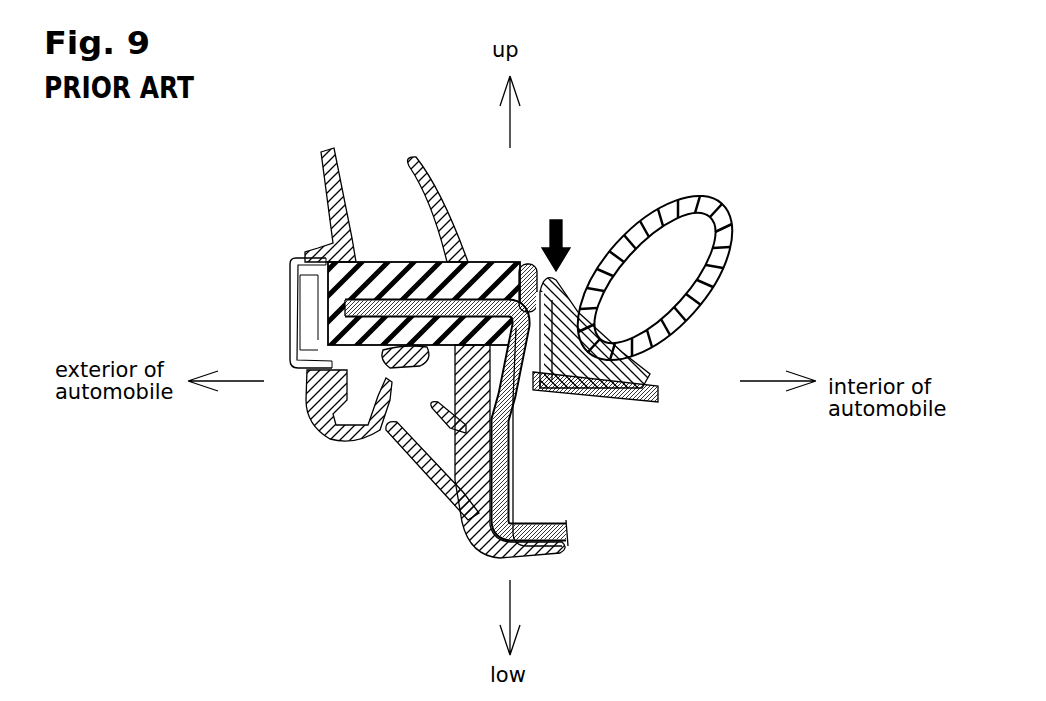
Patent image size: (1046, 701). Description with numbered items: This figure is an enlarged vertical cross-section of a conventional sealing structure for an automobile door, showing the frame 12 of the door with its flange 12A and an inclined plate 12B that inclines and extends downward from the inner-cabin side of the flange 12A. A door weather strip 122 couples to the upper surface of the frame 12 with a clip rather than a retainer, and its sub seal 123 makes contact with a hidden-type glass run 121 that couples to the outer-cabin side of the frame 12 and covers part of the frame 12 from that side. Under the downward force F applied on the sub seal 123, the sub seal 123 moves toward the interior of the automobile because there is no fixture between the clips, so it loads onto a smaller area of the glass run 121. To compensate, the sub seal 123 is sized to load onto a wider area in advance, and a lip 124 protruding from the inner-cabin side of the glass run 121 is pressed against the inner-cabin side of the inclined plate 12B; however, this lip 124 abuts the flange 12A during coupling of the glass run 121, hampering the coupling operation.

The frame 12 is at (630, 390).
The flange 12A is at (414, 292).
The inclined plate 12B is at (558, 386).
The glass run 121 is at (292, 428).
The door weather strip 122 is at (722, 327).
The sub seal 123 is at (577, 296).
The lip 124 is at (503, 296).
The downward force F is at (538, 245).